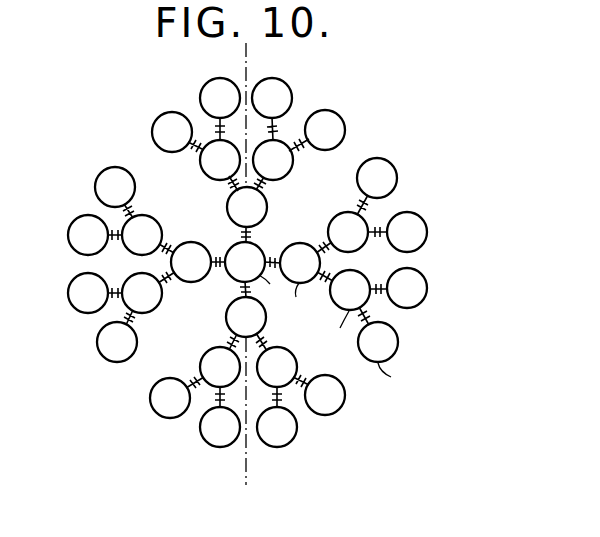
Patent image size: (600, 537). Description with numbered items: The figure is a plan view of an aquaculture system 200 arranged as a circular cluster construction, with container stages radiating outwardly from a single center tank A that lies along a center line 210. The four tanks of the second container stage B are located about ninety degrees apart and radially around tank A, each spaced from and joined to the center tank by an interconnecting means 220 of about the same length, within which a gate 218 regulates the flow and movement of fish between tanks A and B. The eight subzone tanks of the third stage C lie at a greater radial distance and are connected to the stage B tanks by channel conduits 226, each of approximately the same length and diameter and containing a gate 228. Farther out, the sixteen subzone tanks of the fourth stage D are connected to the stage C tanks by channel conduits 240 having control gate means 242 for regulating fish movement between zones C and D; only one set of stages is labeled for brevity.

The aquaculture system 200 is at (142, 115).
The center line 210 is at (248, 55).
The gate 218 is at (276, 253).
The interconnecting means 220 is at (272, 189).
The channel conduit 226 is at (328, 257).
The gate 228 is at (326, 264).
The channel conduit 240 is at (372, 320).
The control gate means 242 is at (370, 313).